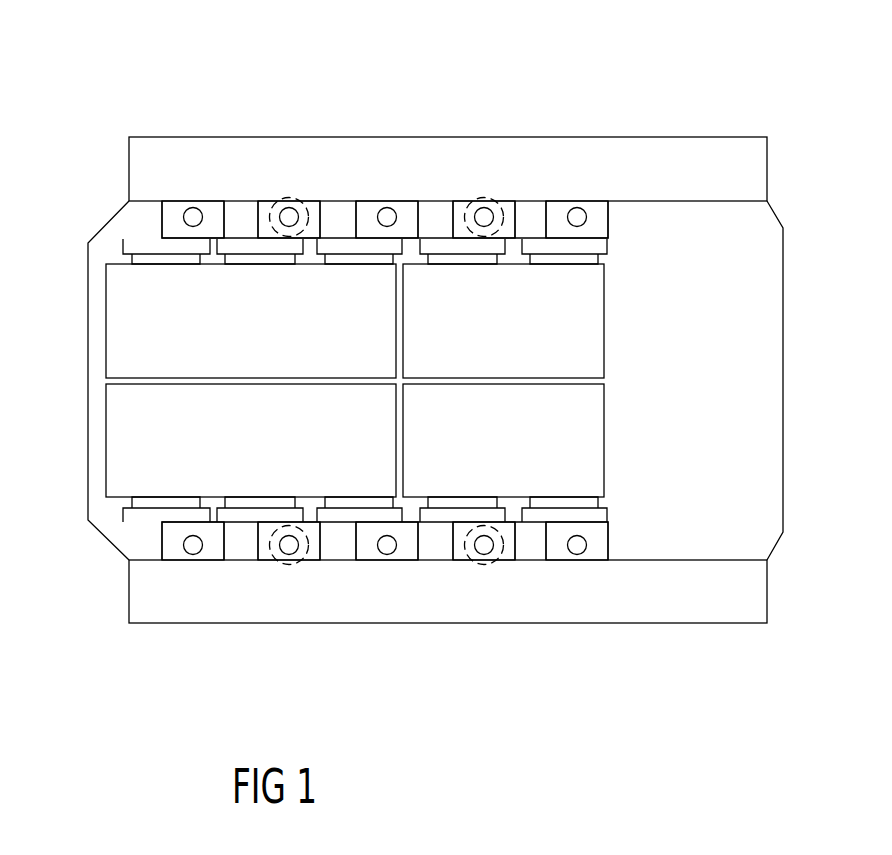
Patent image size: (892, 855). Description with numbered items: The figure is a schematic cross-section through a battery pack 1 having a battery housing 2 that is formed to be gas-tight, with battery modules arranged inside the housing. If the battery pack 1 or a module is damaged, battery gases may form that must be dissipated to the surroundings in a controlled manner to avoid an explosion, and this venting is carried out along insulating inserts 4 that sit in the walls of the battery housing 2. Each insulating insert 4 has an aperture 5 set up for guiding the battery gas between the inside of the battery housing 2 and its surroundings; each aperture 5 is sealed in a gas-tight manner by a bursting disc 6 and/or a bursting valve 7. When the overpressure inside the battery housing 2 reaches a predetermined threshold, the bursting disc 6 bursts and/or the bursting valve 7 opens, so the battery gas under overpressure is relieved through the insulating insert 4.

The battery pack 1 is at (233, 102).
The battery housing 2 is at (614, 138).
The insulating insert 4 is at (296, 201).
The aperture 5 is at (387, 381).
The bursting disc 6 is at (193, 556).
The bursting valve 7 is at (385, 381).